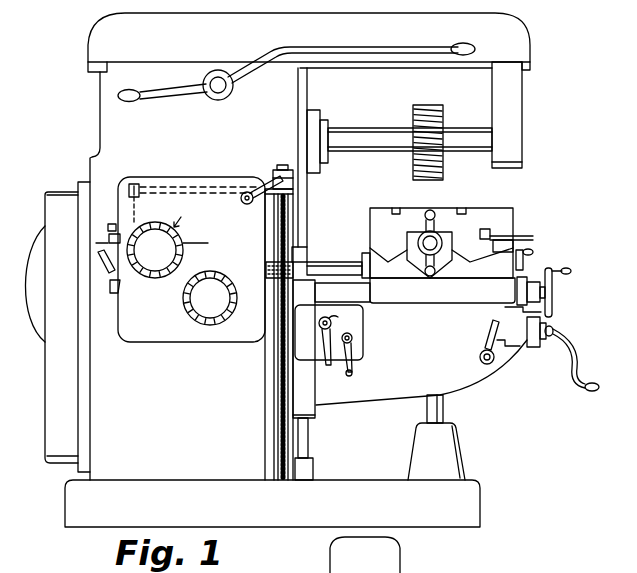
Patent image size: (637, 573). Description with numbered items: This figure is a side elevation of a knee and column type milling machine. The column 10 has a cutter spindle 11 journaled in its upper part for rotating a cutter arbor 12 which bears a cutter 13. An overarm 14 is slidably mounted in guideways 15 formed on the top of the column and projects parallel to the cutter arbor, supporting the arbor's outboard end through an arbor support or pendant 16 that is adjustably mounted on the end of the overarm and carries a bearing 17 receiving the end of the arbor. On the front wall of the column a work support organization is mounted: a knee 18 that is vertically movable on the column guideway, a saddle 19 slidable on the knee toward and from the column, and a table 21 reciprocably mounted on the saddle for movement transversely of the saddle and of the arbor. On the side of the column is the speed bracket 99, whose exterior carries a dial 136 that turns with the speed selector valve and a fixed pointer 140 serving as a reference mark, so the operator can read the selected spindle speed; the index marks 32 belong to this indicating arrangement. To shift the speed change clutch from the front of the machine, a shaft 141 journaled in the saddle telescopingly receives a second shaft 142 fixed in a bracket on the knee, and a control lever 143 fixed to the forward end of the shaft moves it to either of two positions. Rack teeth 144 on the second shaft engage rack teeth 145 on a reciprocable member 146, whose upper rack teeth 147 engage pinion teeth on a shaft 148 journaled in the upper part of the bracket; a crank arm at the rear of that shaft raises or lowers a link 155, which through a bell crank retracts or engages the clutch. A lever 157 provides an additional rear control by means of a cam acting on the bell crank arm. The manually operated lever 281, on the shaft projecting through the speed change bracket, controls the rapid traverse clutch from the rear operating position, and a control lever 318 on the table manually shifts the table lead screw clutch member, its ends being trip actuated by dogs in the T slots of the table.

The column 10 is at (252, 299).
The cutter spindle 11 is at (323, 116).
The cutter arbor 12 is at (373, 135).
The cutter 13 is at (428, 106).
The overarm 14 is at (524, 38).
The guideways 15 is at (116, 66).
The arbor support or pendant 16 is at (517, 104).
The bearing 17 is at (303, 223).
The knee 18 is at (462, 383).
The saddle 19 is at (470, 262).
The table 21 is at (483, 217).
The index marks 32 is at (98, 246).
The speed bracket 99 is at (143, 335).
The dial 136 is at (204, 329).
The fixed pointer 140 is at (229, 264).
The shaft 141 is at (364, 253).
The second shaft 142 is at (310, 266).
The control lever 143 is at (277, 283).
The rack teeth 144 is at (281, 262).
The rack teeth 145 is at (279, 262).
The reciprocable member 146 is at (285, 216).
The rack teeth 147 is at (272, 172).
The shaft 148 is at (213, 167).
The link 155 is at (138, 217).
The lever 157 is at (107, 268).
The manually operated lever 281 is at (262, 189).
The control lever 318 is at (518, 236).